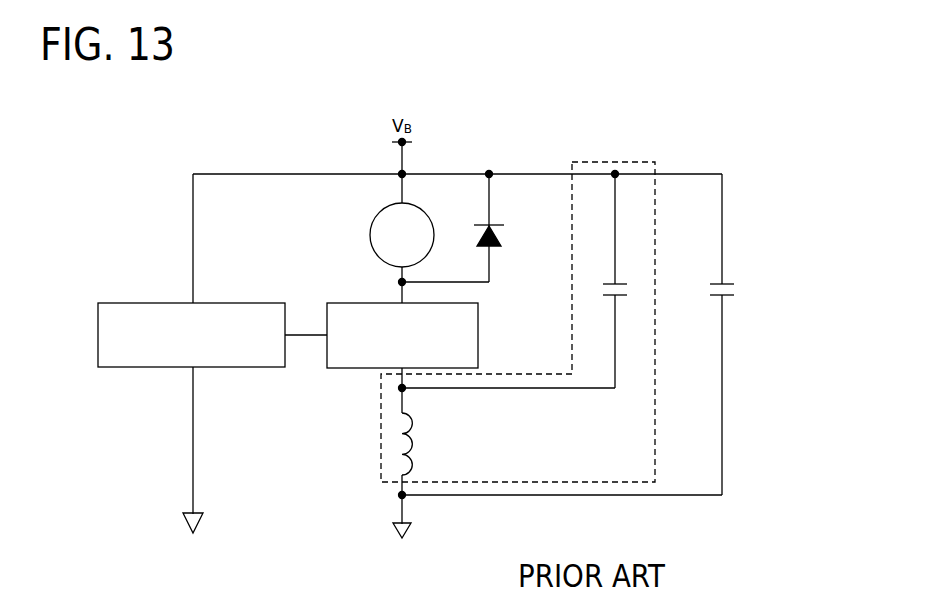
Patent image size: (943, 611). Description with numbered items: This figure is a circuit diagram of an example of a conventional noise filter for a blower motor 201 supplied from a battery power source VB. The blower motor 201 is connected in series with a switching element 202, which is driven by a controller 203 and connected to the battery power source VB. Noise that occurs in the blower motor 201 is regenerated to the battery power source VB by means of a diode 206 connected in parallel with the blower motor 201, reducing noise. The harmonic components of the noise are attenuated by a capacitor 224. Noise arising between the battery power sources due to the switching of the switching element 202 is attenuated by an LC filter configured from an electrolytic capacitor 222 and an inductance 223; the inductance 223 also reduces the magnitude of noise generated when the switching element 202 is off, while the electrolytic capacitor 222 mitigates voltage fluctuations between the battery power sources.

The blower motor 201 is at (371, 225).
The switching element 202 is at (355, 302).
The controller 203 is at (175, 302).
The diode 206 is at (499, 235).
The electrolytic capacitor 222 is at (620, 284).
The inductance 223 is at (413, 443).
The capacitor 224 is at (727, 283).